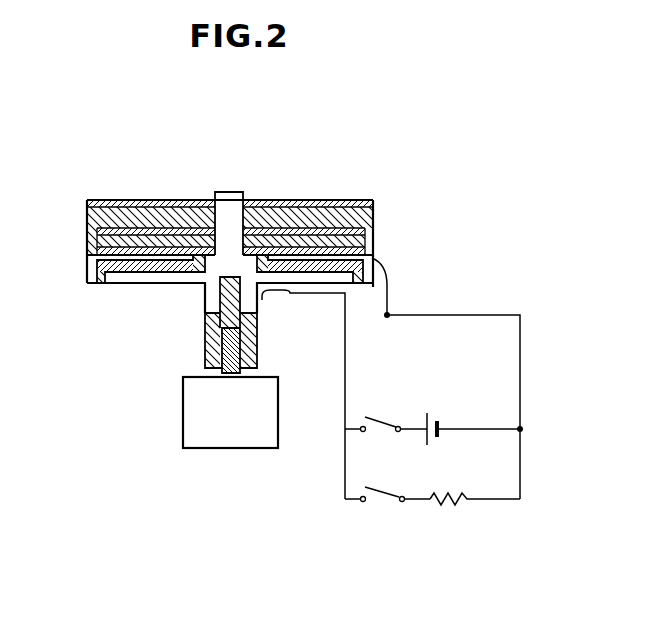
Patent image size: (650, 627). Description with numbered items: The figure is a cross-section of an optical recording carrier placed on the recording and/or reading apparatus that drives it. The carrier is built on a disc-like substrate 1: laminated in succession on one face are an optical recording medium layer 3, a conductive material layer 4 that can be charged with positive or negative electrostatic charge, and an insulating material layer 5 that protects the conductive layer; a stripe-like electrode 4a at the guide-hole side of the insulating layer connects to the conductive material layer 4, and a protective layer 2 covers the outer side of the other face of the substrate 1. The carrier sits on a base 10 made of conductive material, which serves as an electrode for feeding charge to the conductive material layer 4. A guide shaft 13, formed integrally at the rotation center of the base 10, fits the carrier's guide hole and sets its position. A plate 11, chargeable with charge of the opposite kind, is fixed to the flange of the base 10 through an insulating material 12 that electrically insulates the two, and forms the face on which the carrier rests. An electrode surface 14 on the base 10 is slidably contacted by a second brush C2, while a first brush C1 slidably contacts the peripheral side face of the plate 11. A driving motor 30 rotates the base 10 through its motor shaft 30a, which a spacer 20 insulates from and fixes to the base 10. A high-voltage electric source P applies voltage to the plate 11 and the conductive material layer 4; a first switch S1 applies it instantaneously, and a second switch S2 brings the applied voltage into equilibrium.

The substrate 1 is at (317, 207).
The protective layer 2 is at (133, 200).
The optical recording medium layer 3 is at (373, 228).
The conductive material layer 4 is at (373, 243).
The stripe-like electrode 4a is at (257, 203).
The insulating material layer 5 is at (370, 252).
The base 10 is at (130, 277).
The plate 11 is at (92, 262).
The insulating material 12 is at (102, 283).
The guide shaft 13 is at (228, 200).
The electrode surface 14 is at (262, 298).
The spacer 20 is at (205, 335).
The driving motor 30 is at (223, 448).
The motor shaft 30a is at (205, 347).
The first brush C1 is at (390, 293).
The second brush C2 is at (300, 293).
The first switch S1 is at (375, 417).
The second switch S2 is at (388, 490).
The high-voltage electric source P is at (427, 413).